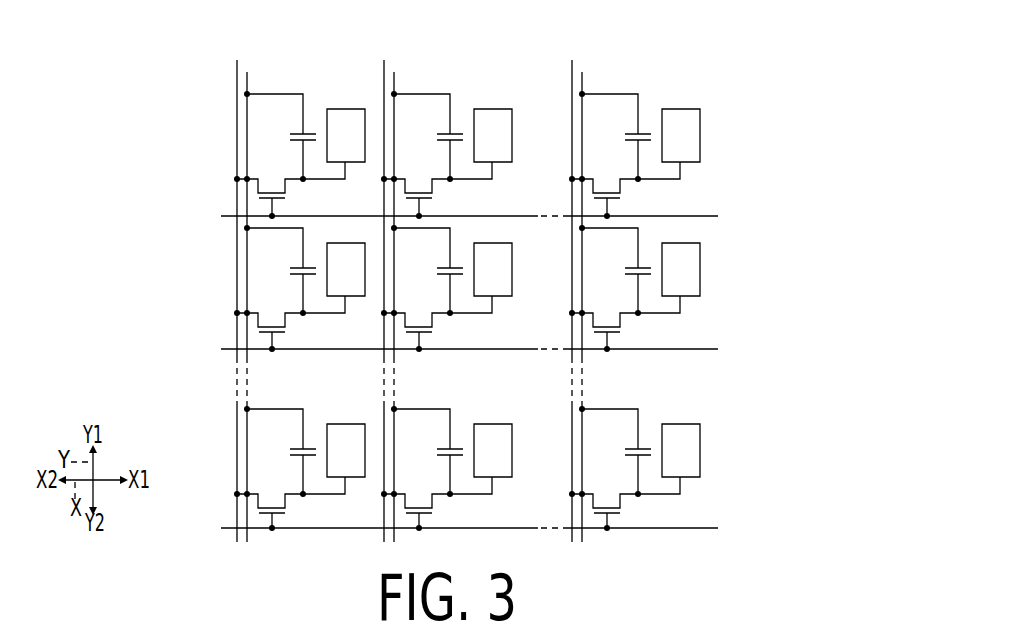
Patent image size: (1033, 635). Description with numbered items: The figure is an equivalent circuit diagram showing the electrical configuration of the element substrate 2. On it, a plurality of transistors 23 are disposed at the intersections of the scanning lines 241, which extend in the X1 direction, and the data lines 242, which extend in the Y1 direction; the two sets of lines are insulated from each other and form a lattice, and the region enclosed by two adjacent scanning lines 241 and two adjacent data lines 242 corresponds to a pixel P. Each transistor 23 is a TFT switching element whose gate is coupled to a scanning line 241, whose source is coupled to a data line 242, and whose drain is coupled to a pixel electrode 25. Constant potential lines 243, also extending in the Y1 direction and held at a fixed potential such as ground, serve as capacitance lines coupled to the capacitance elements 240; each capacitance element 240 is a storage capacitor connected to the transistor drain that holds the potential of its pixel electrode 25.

The element substrate 2 is at (732, 91).
The transistor 23 is at (302, 198).
The pixel electrode 25 is at (358, 95).
The capacitance element 240 is at (281, 135).
The scanning line 241 is at (220, 216).
The data line 242 is at (237, 61).
The constant potential line 243 is at (248, 80).
The pixel P is at (231, 130).